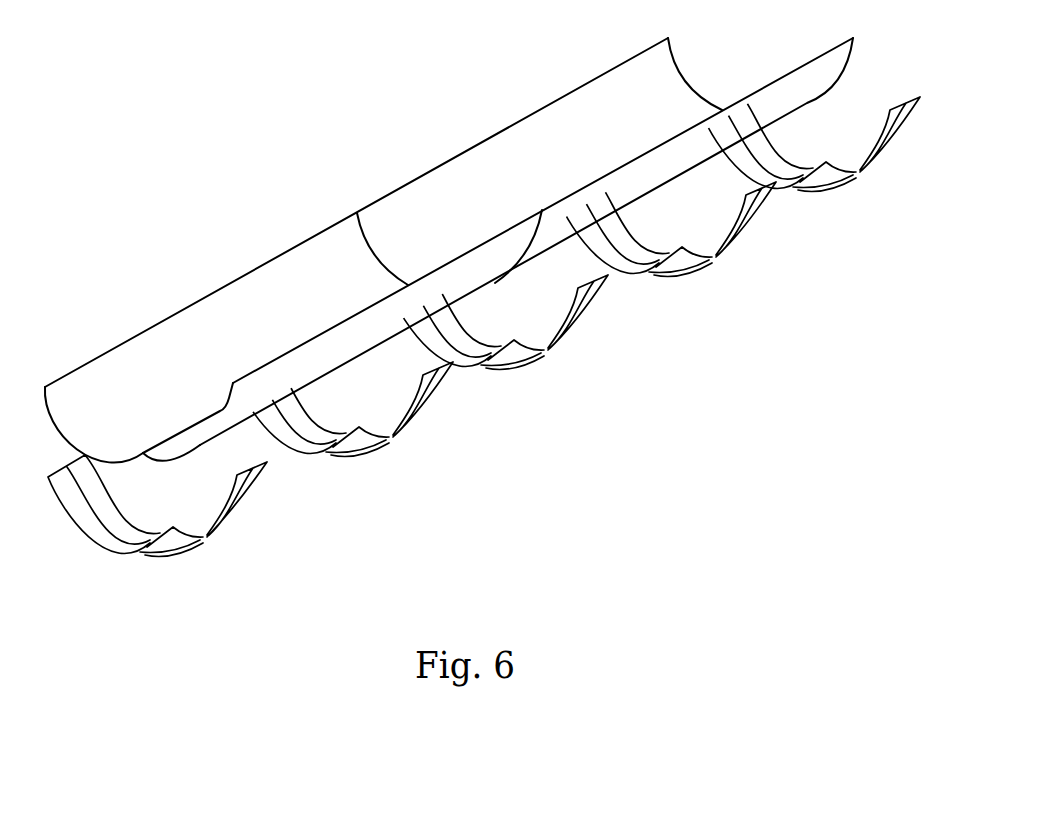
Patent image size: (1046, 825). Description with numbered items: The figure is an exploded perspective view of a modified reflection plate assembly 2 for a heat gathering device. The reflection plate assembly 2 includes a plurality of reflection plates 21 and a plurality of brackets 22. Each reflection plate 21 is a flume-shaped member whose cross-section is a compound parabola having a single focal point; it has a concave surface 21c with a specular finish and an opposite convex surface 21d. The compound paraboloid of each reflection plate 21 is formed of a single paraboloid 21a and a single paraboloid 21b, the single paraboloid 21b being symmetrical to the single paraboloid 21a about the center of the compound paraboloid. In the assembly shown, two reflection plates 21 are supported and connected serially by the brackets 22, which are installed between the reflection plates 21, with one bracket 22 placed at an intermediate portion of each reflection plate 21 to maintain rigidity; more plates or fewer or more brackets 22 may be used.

The reflection plate assembly 2 is at (268, 118).
The reflection plate 21 is at (449, 273).
The single paraboloid 21a is at (95, 395).
The single paraboloid 21b is at (190, 440).
The concave surface 21c is at (325, 258).
The convex surface 21d is at (240, 403).
The bracket 22 is at (250, 502).